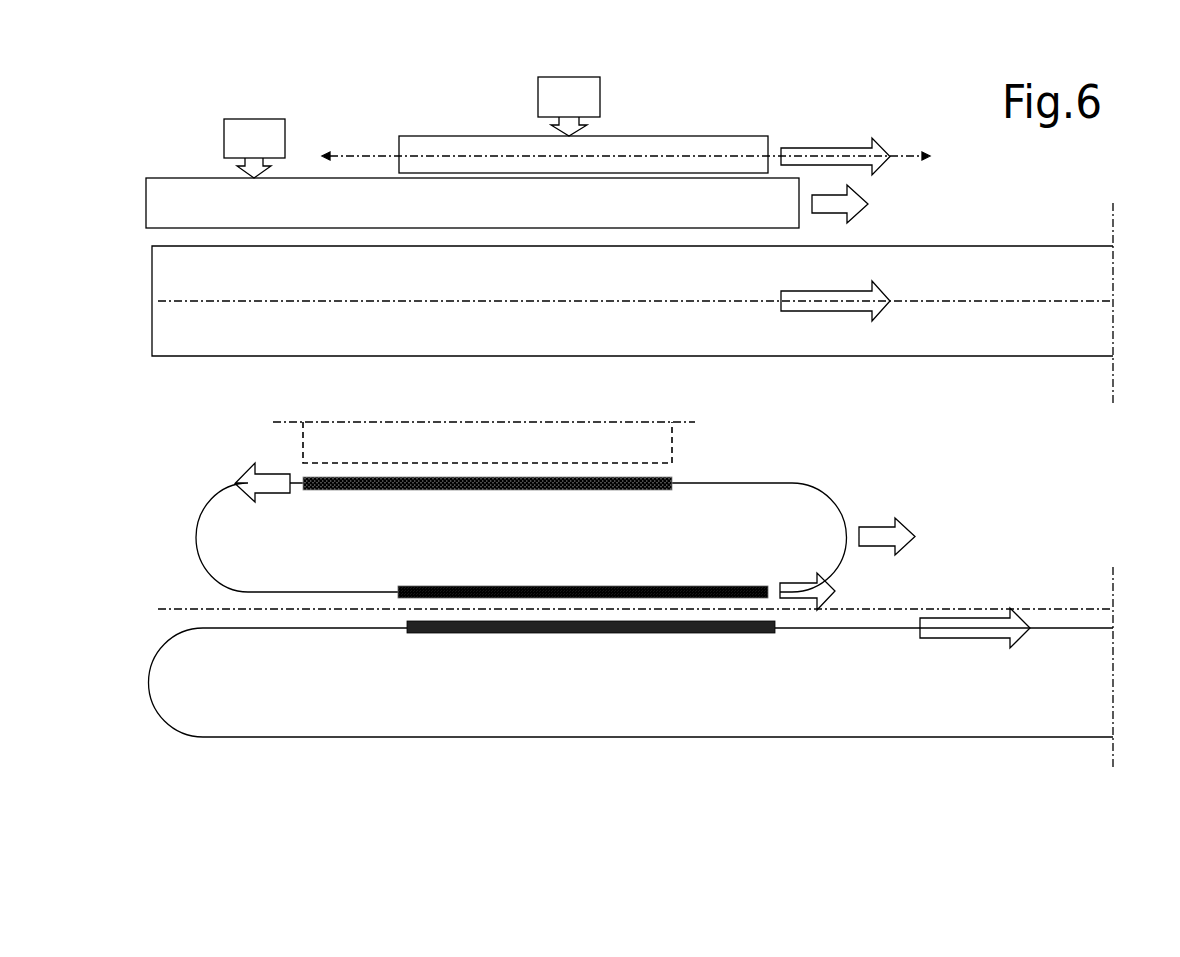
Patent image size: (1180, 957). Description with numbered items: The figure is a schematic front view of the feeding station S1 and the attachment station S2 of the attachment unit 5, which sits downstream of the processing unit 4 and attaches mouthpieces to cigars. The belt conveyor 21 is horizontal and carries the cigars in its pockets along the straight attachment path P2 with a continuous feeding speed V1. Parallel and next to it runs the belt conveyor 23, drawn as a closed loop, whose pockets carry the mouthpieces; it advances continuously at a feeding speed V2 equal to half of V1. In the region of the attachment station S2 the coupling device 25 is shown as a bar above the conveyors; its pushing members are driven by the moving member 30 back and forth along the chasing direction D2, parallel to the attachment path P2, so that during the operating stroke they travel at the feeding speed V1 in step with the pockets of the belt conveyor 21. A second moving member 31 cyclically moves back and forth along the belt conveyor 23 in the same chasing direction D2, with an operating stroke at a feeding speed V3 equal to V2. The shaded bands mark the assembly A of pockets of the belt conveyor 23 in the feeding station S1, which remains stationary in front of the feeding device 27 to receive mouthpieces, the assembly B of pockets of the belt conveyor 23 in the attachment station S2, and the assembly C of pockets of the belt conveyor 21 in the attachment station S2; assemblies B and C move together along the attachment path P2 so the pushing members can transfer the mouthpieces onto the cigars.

The processing unit 4 is at (1010, 749).
The attachment unit 5 is at (917, 132).
The belt conveyor 21 is at (1079, 221).
The belt conveyor 23 is at (191, 153).
The coupling device 25 is at (382, 143).
The feeding device 27 is at (285, 440).
The moving member 30 is at (569, 106).
The moving member 31 is at (254, 148).
The feeding speed V1 is at (797, 157).
The feeding speed V2 is at (272, 483).
The feeding speed V3 is at (841, 203).
The chasing direction D2 is at (853, 157).
The attachment path P2 is at (1005, 300).
The feeding station S1 is at (474, 450).
The attachment station S2 is at (562, 268).
The assembly of pockets A is at (440, 490).
The assembly of pockets B is at (655, 586).
The assembly of pockets C is at (695, 634).